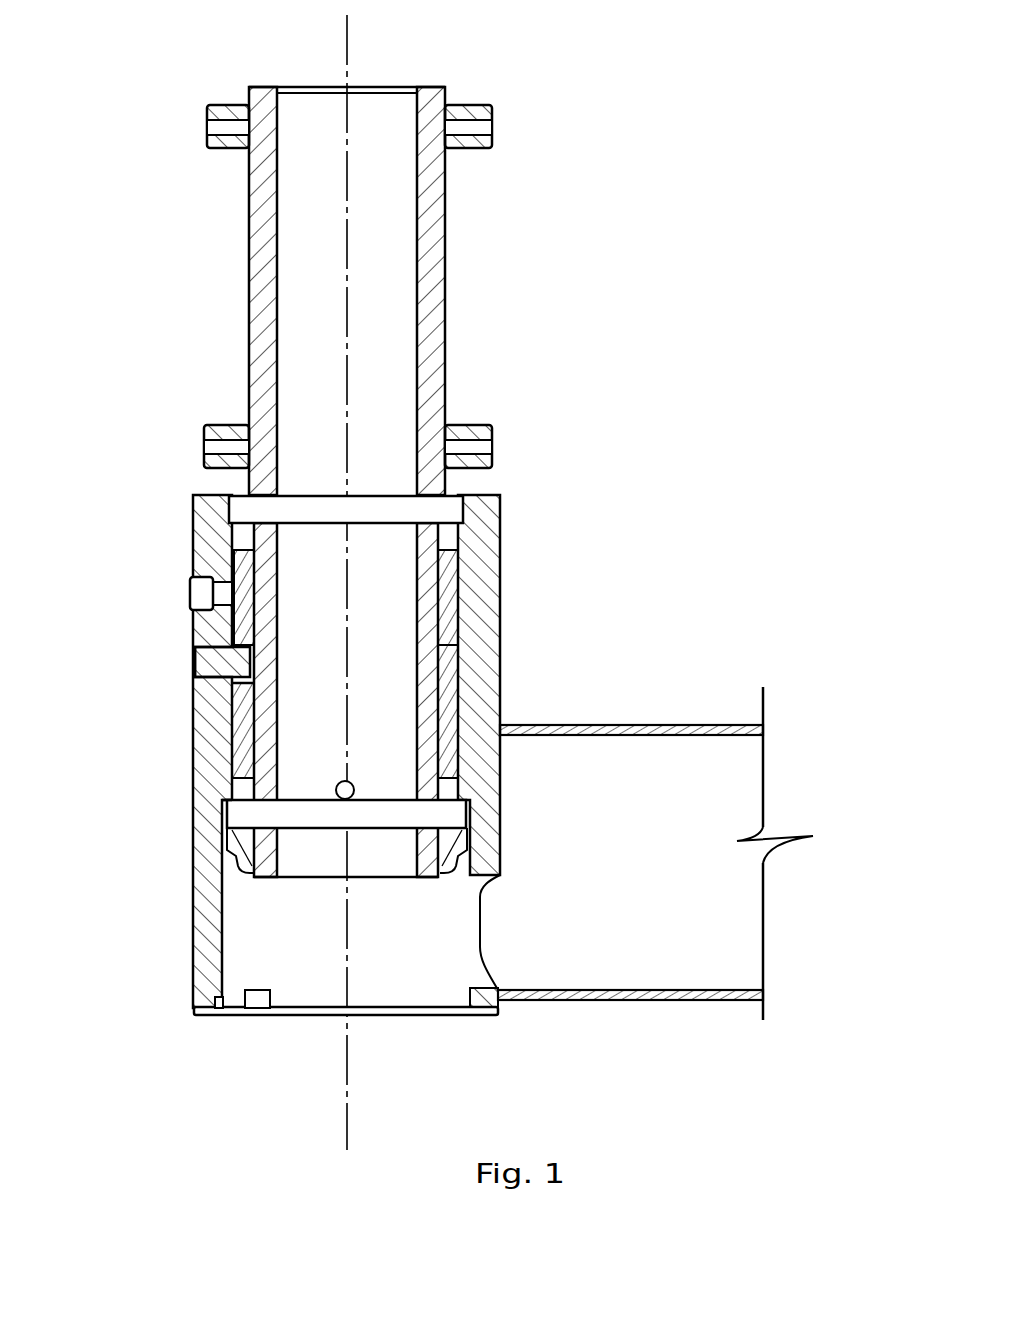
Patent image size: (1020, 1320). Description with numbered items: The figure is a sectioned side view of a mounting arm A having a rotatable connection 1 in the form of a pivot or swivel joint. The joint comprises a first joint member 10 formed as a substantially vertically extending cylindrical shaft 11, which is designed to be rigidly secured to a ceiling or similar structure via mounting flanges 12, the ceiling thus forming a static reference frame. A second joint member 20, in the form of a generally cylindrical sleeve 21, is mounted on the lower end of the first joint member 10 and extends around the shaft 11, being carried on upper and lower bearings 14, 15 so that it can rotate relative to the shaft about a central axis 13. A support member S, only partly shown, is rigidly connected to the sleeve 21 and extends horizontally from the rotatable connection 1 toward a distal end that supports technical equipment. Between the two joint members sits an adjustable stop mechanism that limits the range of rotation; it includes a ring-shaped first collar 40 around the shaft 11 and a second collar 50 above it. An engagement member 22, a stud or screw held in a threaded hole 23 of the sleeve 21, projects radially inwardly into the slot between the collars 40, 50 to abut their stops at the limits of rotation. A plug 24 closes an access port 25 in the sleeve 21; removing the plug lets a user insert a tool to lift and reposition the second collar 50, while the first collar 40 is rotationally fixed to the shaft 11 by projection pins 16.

The rotatable connection 1 is at (640, 407).
The first joint member 10 is at (507, 268).
The shaft 11 is at (258, 335).
The mounting flanges 12 is at (208, 153).
The central axis 13 is at (347, 1120).
The upper bearing 14 is at (390, 493).
The lower bearing 15 is at (393, 797).
The projection pins 16 is at (353, 783).
The second joint member 20 is at (522, 660).
The sleeve 21 is at (205, 812).
The engagement member 22 is at (213, 653).
The threaded hole 23 is at (227, 692).
The plug 24 is at (193, 583).
The access port 25 is at (205, 575).
The first collar 40 is at (437, 710).
The second collar 50 is at (460, 575).
The support member S is at (500, 700).
The mounting arm A is at (167, 1067).